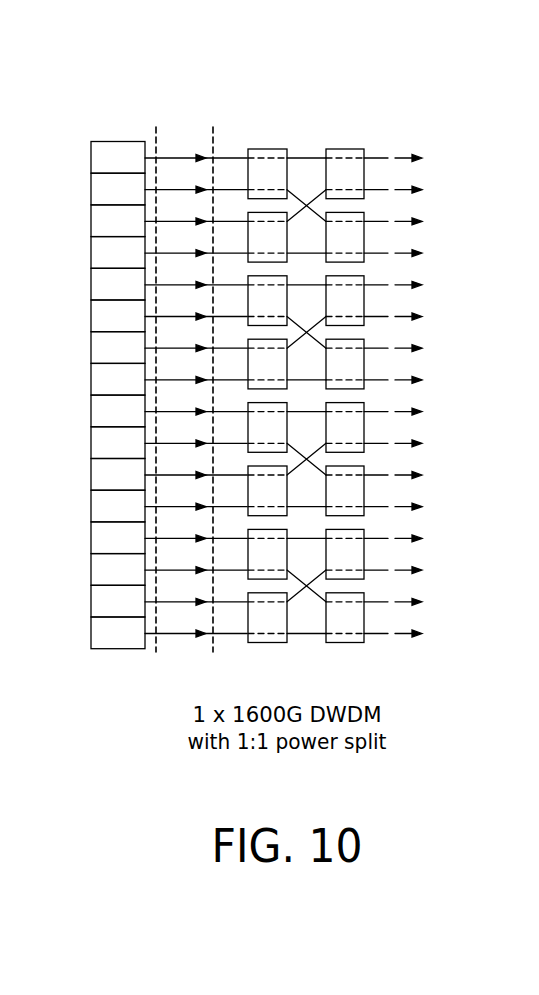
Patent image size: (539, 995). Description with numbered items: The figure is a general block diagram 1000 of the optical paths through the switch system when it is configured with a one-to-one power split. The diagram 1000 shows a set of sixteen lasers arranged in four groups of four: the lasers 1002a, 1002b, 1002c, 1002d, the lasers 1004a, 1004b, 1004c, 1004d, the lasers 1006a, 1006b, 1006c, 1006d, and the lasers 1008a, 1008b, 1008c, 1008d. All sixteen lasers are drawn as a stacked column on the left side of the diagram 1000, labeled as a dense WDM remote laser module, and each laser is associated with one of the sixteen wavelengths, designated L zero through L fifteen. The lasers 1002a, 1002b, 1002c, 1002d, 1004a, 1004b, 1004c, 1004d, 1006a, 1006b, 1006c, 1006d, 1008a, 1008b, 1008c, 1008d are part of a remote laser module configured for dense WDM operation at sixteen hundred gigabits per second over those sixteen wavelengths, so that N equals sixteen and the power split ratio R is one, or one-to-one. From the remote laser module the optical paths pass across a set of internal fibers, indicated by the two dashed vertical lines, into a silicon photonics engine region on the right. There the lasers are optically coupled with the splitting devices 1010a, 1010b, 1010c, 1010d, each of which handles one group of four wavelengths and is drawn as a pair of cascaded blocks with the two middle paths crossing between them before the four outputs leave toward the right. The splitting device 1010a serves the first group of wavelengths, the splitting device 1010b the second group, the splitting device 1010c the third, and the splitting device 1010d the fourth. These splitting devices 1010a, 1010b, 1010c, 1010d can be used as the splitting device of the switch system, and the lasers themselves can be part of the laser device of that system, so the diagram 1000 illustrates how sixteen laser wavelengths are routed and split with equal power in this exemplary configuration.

The diagram 1000 is at (266, 70).
The laser 1002a is at (91, 159).
The laser 1002b is at (91, 191).
The laser 1002c is at (91, 222).
The laser 1002d is at (91, 254).
The laser 1004a is at (91, 286).
The laser 1004b is at (91, 318).
The laser 1004c is at (91, 349).
The laser 1004d is at (91, 381).
The laser 1006a is at (91, 413).
The laser 1006b is at (91, 444).
The laser 1006c is at (91, 476).
The laser 1006d is at (91, 508).
The laser 1008a is at (91, 539).
The laser 1008b is at (91, 571).
The laser 1008c is at (91, 603).
The laser 1008d is at (91, 634).
The splitting device 1010a is at (376, 132).
The splitting device 1010b is at (476, 332).
The splitting device 1010c is at (476, 460).
The splitting device 1010d is at (376, 658).